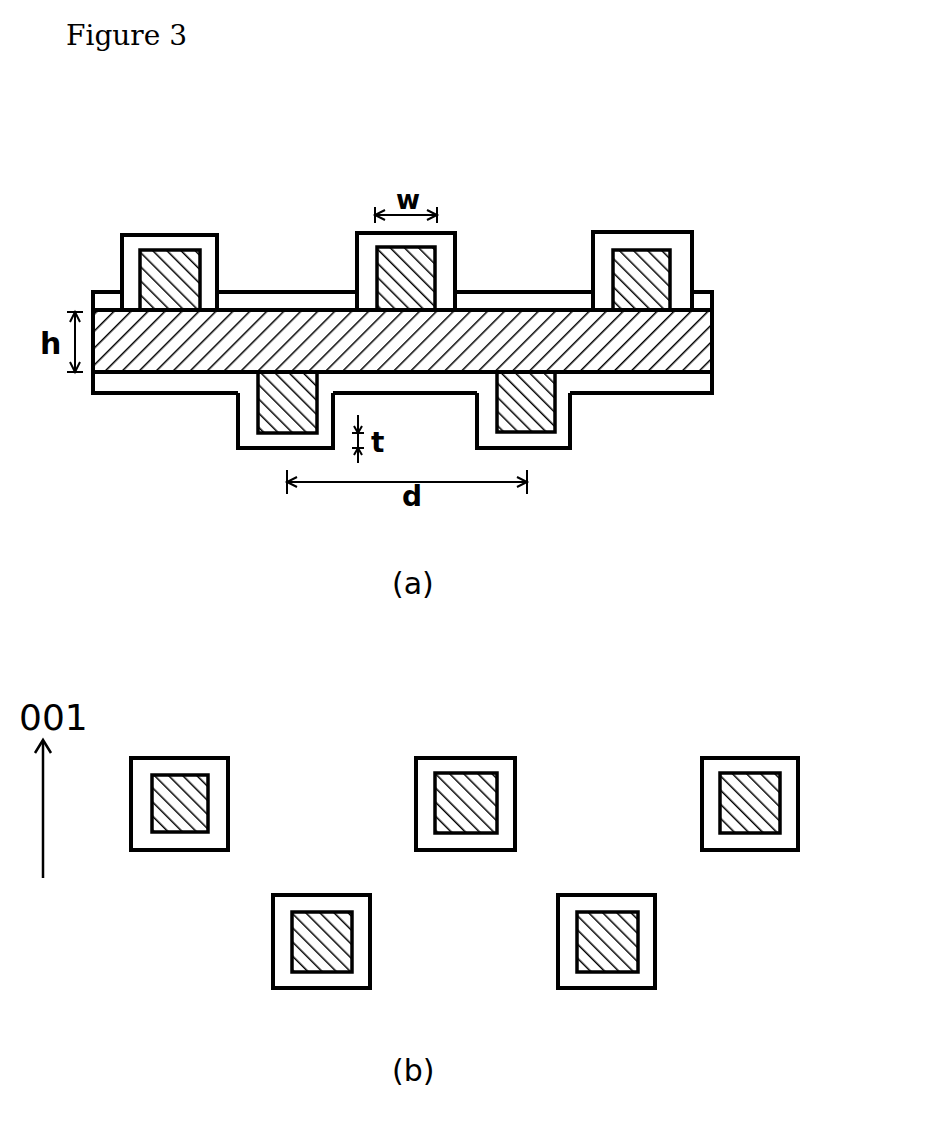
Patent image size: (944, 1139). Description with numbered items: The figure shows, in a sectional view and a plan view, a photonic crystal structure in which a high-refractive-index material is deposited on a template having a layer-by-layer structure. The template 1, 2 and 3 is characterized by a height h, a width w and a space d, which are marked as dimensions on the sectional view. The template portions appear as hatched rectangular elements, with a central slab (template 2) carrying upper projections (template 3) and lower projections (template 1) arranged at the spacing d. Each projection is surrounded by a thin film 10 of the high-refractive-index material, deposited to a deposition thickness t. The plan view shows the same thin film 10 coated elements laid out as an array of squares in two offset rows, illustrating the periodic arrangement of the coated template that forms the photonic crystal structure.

The template 1 is at (530, 432).
The template 2 is at (715, 335).
The template 3 is at (138, 277).
The thin film of high-refractive-index material 10 is at (455, 243).